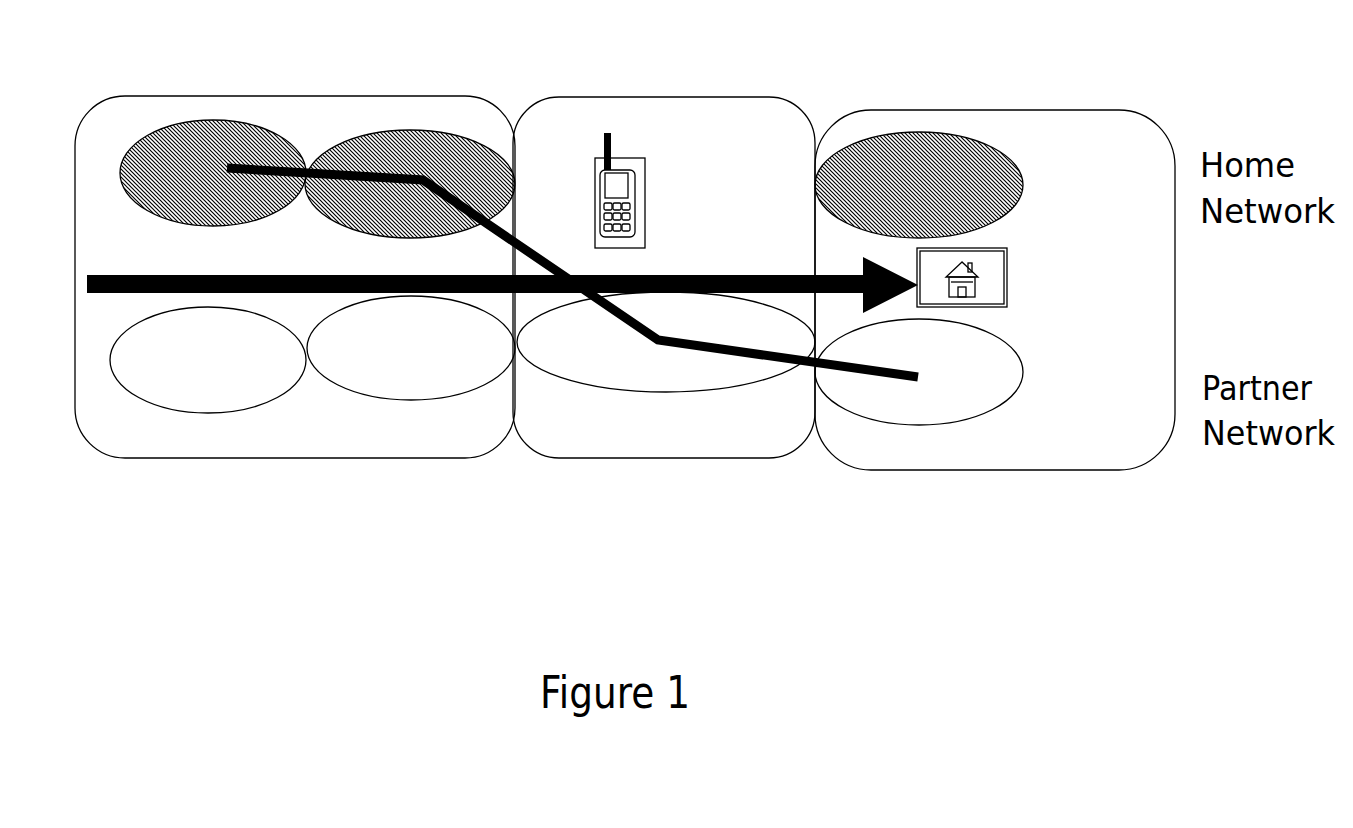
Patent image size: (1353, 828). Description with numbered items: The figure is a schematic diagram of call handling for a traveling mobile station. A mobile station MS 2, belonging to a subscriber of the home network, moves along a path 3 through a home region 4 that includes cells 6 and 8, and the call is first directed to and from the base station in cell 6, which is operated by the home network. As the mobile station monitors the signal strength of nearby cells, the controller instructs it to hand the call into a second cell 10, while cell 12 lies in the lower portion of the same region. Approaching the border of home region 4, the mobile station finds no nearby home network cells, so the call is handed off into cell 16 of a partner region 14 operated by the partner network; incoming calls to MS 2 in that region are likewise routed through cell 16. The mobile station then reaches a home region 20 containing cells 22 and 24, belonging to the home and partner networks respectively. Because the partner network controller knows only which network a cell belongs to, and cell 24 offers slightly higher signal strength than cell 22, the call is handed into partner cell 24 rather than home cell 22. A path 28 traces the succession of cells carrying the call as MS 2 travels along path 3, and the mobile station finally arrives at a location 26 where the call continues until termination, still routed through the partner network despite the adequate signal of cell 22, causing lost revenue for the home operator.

The mobile station 2 is at (630, 187).
The path 3 is at (125, 275).
The home region 4 is at (253, 477).
The cell 6 is at (212, 130).
The cell 8 is at (178, 400).
The second cell 10 is at (385, 152).
The partner network cell 12 is at (375, 378).
The partner region 14 is at (565, 479).
The cell 16 is at (607, 377).
The home region 20 is at (865, 490).
The cell 22 is at (978, 153).
The cell 24 is at (1000, 377).
The location 26 is at (1007, 272).
The path 28 is at (453, 205).